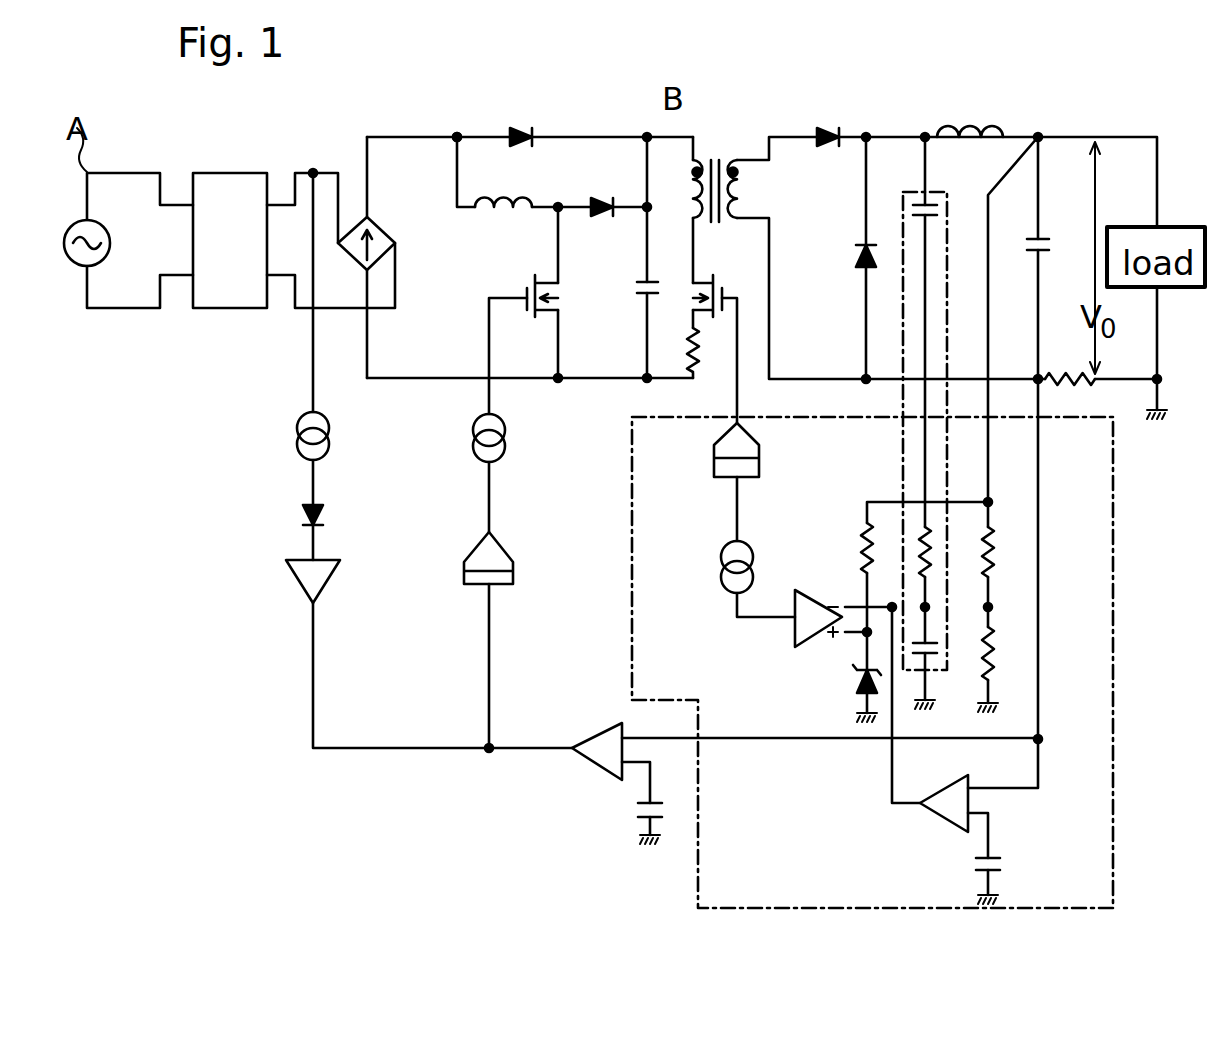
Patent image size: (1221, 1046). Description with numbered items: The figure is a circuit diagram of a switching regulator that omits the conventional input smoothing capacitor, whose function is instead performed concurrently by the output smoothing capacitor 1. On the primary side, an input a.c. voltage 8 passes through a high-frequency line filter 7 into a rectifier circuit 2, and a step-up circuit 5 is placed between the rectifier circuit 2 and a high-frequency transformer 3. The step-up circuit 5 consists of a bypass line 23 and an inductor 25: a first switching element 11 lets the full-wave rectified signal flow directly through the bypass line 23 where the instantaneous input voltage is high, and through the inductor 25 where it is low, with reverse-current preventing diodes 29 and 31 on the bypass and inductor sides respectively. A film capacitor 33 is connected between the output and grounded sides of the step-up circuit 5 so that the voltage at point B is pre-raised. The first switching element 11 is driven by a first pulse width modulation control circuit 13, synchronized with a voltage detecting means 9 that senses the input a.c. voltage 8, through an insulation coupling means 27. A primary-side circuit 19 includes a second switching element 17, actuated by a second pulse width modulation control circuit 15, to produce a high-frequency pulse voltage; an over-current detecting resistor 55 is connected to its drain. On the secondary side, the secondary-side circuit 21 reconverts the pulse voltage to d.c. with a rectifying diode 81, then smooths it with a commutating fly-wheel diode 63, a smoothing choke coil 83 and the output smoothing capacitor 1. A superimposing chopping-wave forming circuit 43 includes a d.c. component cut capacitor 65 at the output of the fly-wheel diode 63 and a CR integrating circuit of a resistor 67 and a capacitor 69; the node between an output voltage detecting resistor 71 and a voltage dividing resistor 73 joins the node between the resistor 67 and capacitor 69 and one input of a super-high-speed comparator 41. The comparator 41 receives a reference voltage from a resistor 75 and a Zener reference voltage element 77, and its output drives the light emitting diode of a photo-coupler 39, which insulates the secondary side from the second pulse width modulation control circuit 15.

The output smoothing capacitor 1 is at (1044, 236).
The rectifier circuit 2 is at (378, 237).
The high-frequency transformer 3 is at (712, 158).
The step-up circuit 5 is at (601, 164).
The high-frequency line filter 7 is at (224, 292).
The input a.c. voltage 8 is at (106, 234).
The voltage detecting means 9 is at (322, 585).
The first switching element 11 is at (558, 291).
The first pulse width modulation control circuit 13 is at (500, 585).
The second pulse width modulation control circuit 15 is at (1113, 737).
The second switching element 17 is at (722, 284).
The primary-side circuit 19 is at (462, 119).
The secondary-side circuit 21 is at (918, 104).
The bypass line 23 is at (571, 136).
The inductor 25 is at (505, 210).
The insulation coupling means 27 is at (505, 442).
The reverse-current preventing diode 29 is at (510, 149).
The reverse-current preventing diode 31 is at (605, 224).
The film capacitor 33 is at (654, 284).
The photo-coupler 39 is at (723, 586).
The super-high-speed comparator 41 is at (812, 623).
The superimposing chopping-wave forming circuit 43 is at (903, 447).
The over-current detecting resistor 55 is at (698, 354).
The commutating fly-wheel diode 63 is at (856, 258).
The d.c. component cut capacitor 65 is at (936, 211).
The resistor 67 is at (928, 545).
The capacitor 69 is at (936, 658).
The output voltage detecting resistor 71 is at (995, 555).
The voltage dividing resistor 73 is at (995, 650).
The resistor 75 is at (860, 545).
The reference voltage element 77 is at (855, 688).
The rectifying diode 81 is at (826, 130).
The smoothing choke coil 83 is at (990, 135).